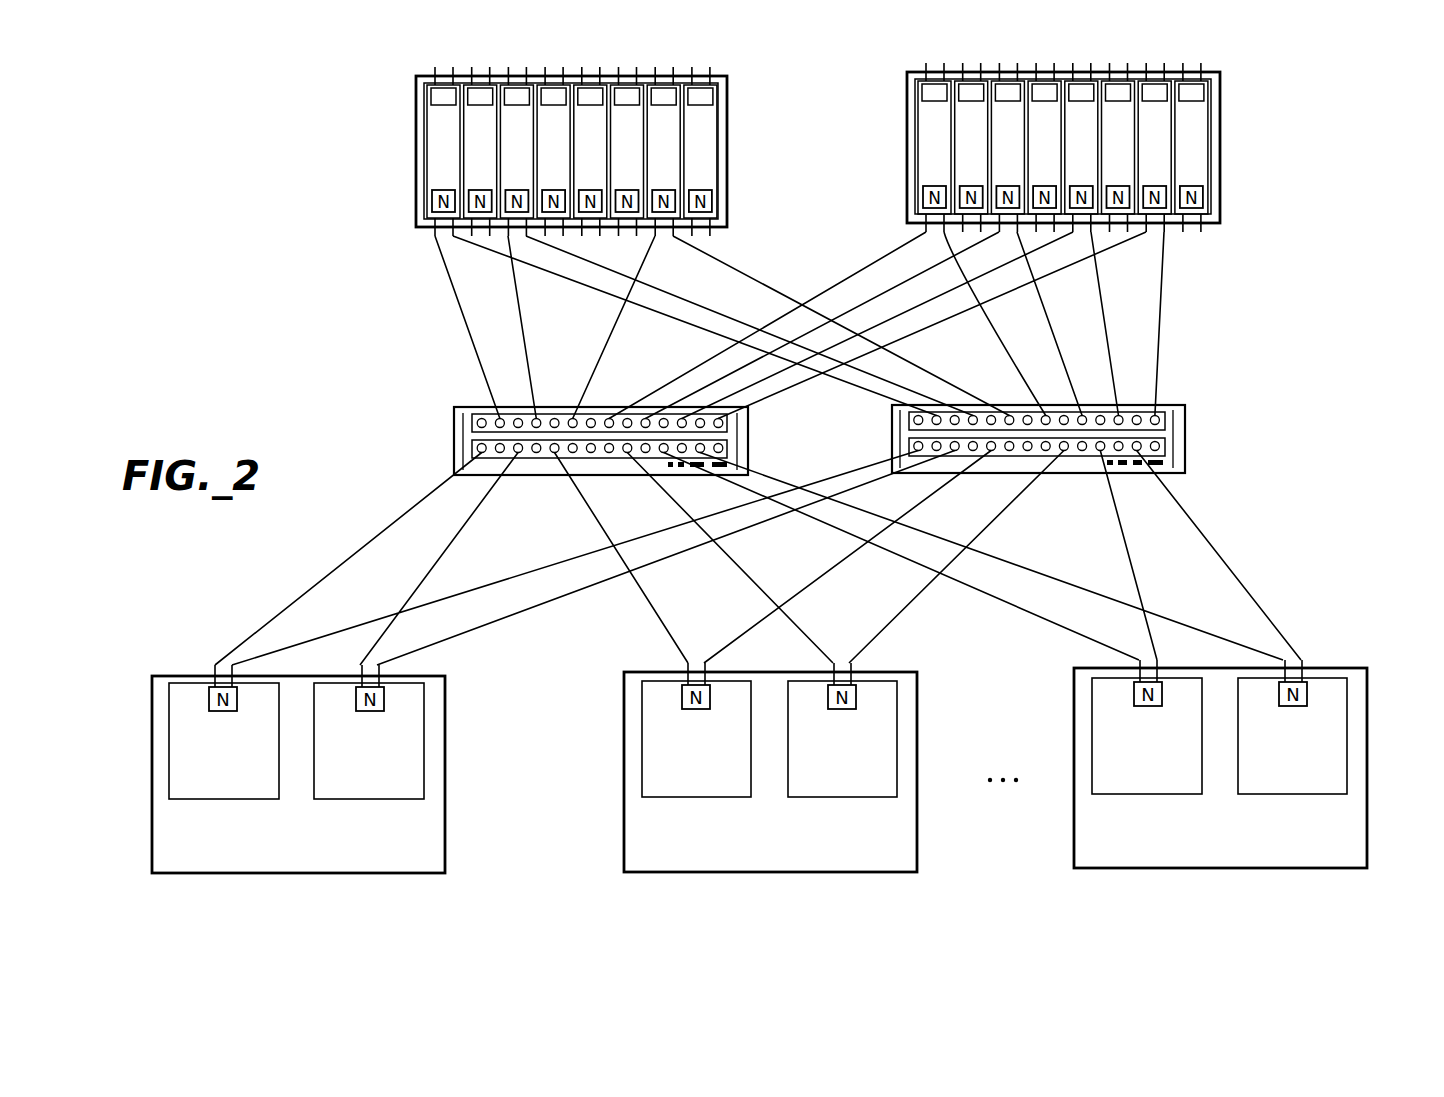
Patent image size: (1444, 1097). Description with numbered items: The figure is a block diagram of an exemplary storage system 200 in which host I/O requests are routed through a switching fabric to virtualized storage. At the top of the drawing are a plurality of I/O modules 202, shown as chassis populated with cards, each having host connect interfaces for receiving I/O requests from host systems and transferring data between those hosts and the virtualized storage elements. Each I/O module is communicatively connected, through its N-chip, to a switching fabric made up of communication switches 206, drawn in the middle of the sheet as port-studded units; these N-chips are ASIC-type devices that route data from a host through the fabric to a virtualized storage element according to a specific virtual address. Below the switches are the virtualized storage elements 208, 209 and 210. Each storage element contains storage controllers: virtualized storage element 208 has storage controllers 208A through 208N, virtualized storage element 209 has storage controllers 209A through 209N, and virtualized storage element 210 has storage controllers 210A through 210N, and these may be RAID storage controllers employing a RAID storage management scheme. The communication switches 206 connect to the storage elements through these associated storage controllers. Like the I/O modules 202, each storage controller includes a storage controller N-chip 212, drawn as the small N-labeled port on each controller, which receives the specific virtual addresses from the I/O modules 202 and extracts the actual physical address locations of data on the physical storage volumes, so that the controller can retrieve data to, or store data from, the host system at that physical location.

The storage system 200 is at (257, 112).
The I/O module 202 is at (460, 152).
The communication switch 206 is at (468, 407).
The virtualized storage element 208 is at (266, 759).
The storage controller 208A is at (255, 800).
The storage controller 208N is at (397, 800).
The virtualized storage element 209 is at (734, 755).
The storage controller 209A is at (725, 798).
The storage controller 209N is at (875, 798).
The virtualized storage element 210 is at (1240, 722).
The storage controller 210A is at (1180, 795).
The storage controller 210N is at (1335, 795).
The storage controller N-chip 212 is at (1345, 633).